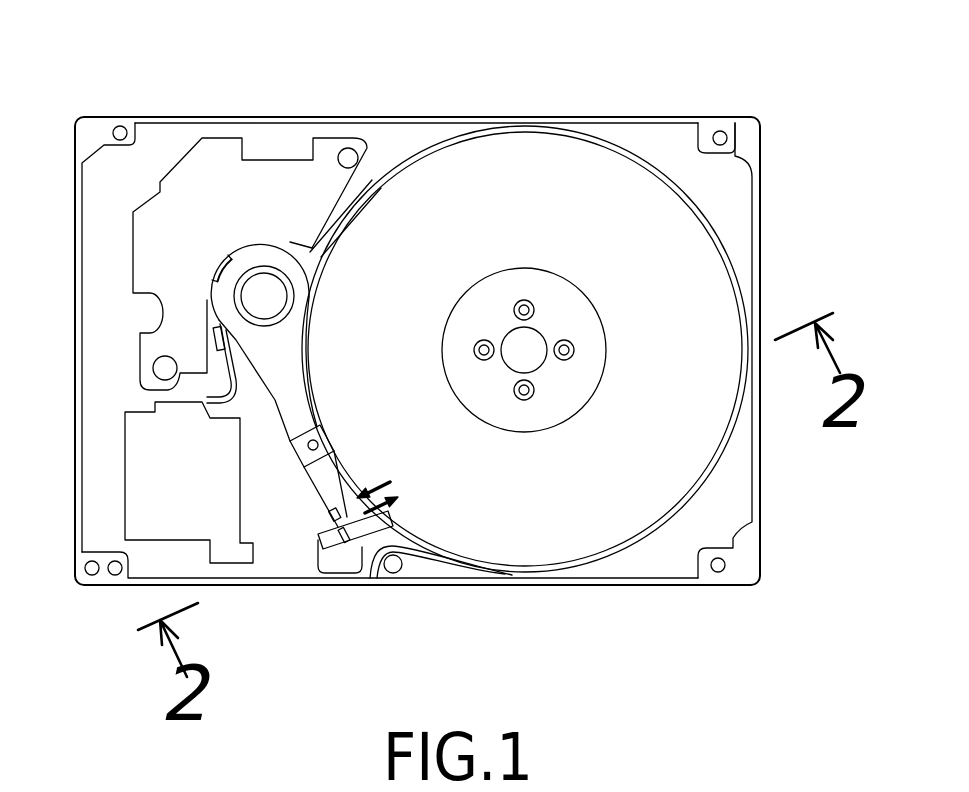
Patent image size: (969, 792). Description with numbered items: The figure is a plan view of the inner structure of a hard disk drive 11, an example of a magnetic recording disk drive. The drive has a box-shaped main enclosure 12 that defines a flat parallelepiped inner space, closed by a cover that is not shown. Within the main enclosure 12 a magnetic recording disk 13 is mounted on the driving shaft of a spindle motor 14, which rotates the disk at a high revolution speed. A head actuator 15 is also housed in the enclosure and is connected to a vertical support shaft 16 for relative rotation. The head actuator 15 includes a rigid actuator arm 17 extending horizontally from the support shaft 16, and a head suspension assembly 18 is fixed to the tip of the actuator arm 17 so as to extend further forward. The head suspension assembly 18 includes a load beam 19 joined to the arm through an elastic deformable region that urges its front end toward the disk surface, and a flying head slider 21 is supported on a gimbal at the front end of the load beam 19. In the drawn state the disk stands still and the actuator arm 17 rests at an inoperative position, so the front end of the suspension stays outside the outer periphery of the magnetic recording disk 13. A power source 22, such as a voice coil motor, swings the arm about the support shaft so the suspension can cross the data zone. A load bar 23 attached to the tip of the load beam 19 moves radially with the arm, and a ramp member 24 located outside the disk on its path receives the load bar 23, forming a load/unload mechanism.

The hard disk drive 11 is at (453, 110).
The main enclosure 12 is at (753, 503).
The magnetic recording disk 13 is at (735, 430).
The spindle motor 14 is at (547, 328).
The head actuator 15 is at (303, 318).
The vertical support shaft 16 is at (243, 282).
The actuator arm 17 is at (309, 386).
The head suspension assembly 18 is at (337, 473).
The load beam 19 is at (314, 487).
The flying head slider 21 is at (329, 527).
The power source 22 is at (209, 301).
The load bar 23 is at (323, 574).
The ramp member 24 is at (348, 574).